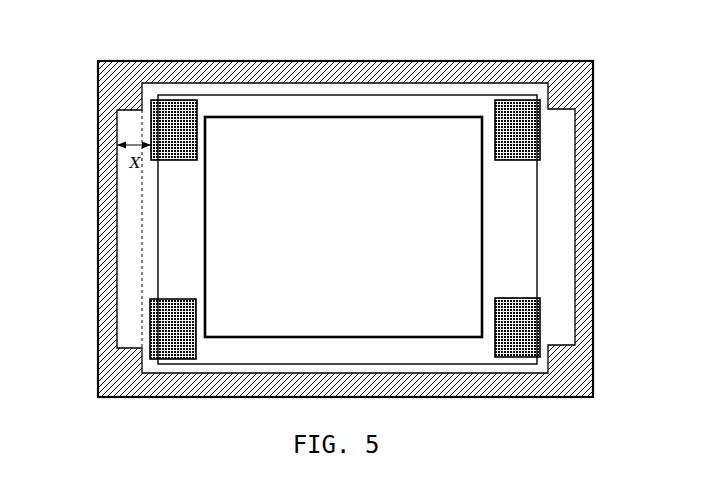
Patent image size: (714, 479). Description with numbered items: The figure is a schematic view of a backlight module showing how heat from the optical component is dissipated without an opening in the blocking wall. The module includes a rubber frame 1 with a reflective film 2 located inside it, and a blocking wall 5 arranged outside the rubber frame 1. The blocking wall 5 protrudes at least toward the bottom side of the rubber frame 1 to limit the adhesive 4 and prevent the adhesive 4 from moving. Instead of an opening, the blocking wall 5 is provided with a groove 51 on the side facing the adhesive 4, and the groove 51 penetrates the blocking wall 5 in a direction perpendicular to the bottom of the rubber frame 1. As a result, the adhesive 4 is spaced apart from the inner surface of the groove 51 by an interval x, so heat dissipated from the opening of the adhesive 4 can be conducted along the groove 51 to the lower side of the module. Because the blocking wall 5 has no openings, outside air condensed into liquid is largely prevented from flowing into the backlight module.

The blocking wall 5 is at (120, 82).
The groove 51 is at (122, 265).
The adhesive 4 is at (158, 167).
The rubber frame 1 is at (542, 282).
The reflective film 2 is at (463, 265).